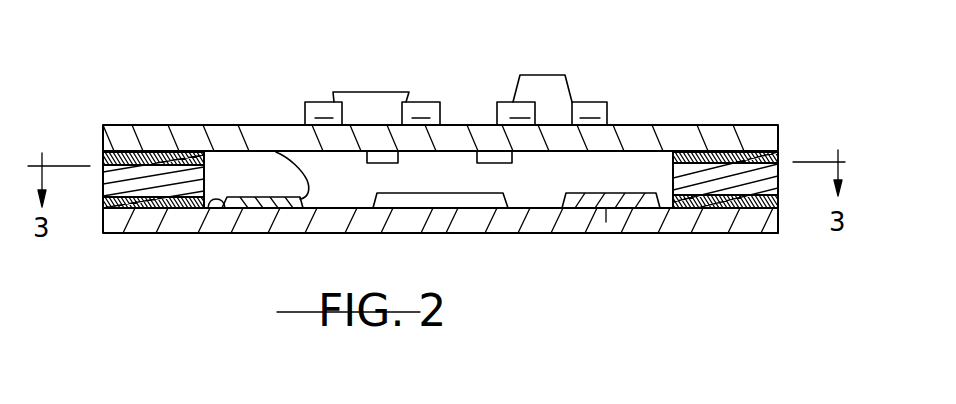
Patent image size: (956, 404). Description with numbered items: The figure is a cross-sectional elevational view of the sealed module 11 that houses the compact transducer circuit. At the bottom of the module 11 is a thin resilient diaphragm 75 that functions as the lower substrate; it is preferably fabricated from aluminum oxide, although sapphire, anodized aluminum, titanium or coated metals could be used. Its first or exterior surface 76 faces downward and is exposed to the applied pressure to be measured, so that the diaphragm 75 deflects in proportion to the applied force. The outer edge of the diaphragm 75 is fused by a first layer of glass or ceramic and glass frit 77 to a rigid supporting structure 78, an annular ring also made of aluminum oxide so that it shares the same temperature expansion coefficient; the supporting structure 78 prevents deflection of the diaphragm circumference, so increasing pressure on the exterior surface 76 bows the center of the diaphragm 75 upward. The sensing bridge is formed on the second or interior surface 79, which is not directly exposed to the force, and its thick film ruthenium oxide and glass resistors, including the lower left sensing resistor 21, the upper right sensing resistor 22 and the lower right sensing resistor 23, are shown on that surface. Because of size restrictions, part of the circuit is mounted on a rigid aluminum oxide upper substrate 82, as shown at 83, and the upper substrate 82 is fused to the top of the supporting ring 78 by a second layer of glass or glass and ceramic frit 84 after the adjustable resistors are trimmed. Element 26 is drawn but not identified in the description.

The sealed module 11 is at (215, 72).
The lower left sensing resistor 21 is at (640, 203).
The upper right sensing resistor 22 is at (273, 152).
The lower right sensing resistor 23 is at (445, 200).
The solder bump 26 is at (163, 212).
The diaphragm 75 is at (606, 222).
The first or exterior surface 76 is at (283, 233).
The first layer of glass or ceramic and glass frit 77 is at (732, 233).
The supporting structure 78 is at (110, 183).
The second or interior surface 79 is at (225, 207).
The upper substrate 82 is at (677, 135).
The circuit portion on upper substrate 83 is at (527, 62).
The second layer of glass or glass and ceramic frit 84 is at (778, 152).